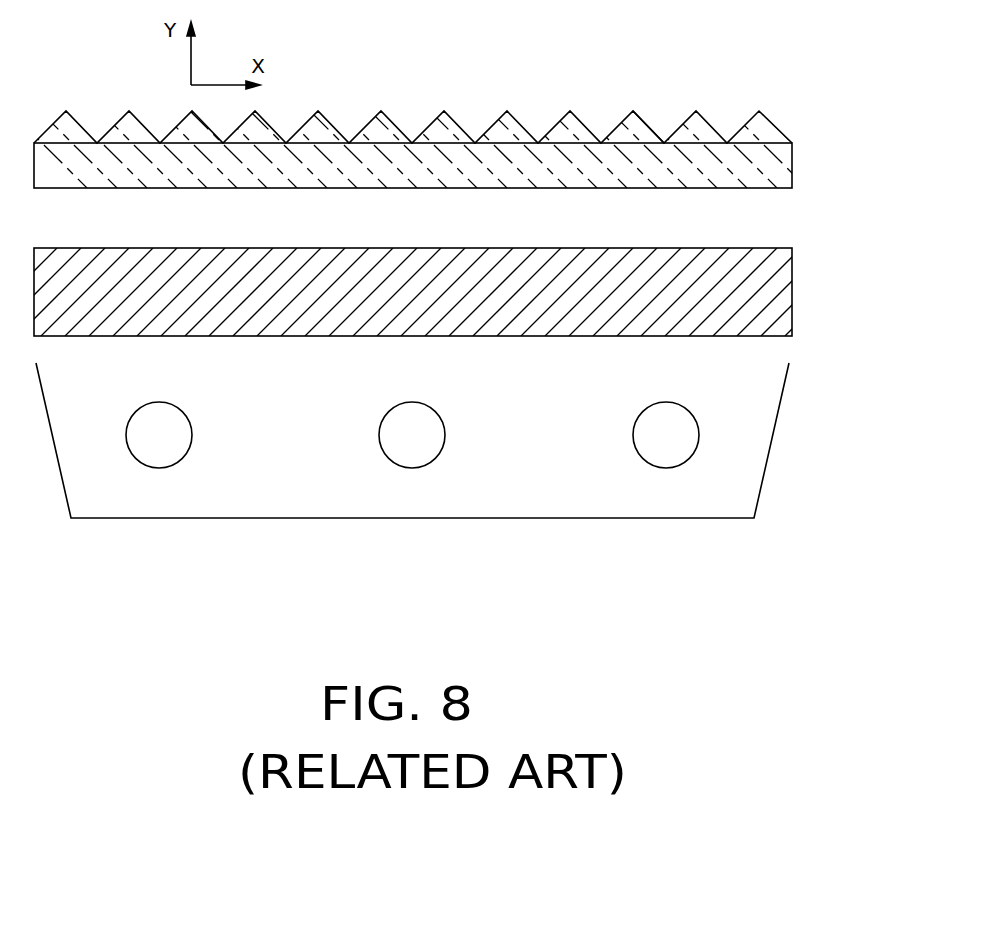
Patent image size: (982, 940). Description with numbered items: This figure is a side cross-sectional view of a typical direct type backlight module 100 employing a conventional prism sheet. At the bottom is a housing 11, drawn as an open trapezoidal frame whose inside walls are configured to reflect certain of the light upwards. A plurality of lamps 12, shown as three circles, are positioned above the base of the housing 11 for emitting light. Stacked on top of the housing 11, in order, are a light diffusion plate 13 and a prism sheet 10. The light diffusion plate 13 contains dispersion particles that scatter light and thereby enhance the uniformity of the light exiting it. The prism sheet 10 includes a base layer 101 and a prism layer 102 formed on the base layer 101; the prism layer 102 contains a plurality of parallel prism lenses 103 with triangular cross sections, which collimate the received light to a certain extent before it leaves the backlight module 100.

The backlight module 100 is at (545, 83).
The prism sheet 10 is at (844, 73).
The base layer 101 is at (723, 177).
The prism layer 102 is at (763, 137).
The prism lenses 103 is at (647, 122).
The light diffusion plate 13 is at (778, 297).
The housing 11 is at (778, 418).
The lamps 12 is at (673, 455).